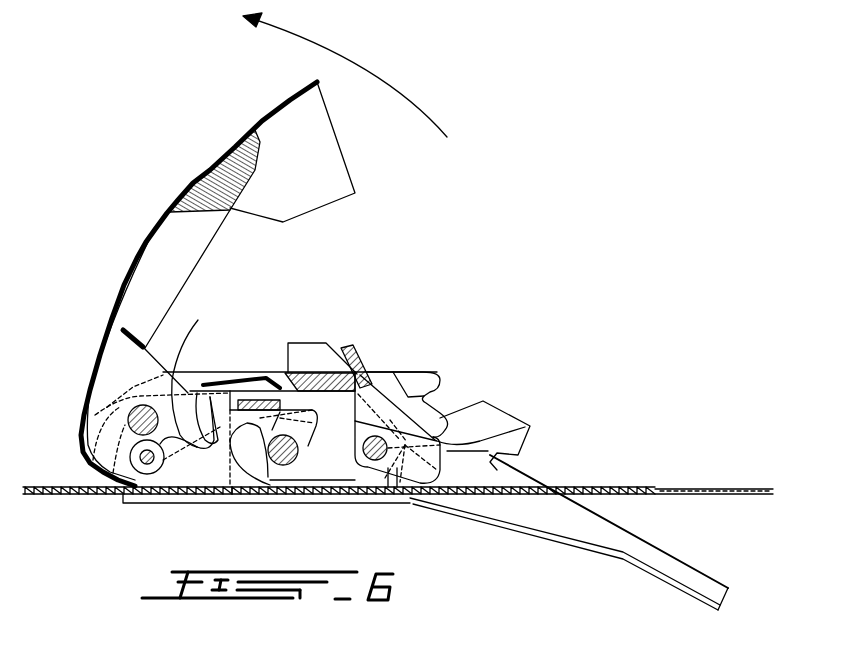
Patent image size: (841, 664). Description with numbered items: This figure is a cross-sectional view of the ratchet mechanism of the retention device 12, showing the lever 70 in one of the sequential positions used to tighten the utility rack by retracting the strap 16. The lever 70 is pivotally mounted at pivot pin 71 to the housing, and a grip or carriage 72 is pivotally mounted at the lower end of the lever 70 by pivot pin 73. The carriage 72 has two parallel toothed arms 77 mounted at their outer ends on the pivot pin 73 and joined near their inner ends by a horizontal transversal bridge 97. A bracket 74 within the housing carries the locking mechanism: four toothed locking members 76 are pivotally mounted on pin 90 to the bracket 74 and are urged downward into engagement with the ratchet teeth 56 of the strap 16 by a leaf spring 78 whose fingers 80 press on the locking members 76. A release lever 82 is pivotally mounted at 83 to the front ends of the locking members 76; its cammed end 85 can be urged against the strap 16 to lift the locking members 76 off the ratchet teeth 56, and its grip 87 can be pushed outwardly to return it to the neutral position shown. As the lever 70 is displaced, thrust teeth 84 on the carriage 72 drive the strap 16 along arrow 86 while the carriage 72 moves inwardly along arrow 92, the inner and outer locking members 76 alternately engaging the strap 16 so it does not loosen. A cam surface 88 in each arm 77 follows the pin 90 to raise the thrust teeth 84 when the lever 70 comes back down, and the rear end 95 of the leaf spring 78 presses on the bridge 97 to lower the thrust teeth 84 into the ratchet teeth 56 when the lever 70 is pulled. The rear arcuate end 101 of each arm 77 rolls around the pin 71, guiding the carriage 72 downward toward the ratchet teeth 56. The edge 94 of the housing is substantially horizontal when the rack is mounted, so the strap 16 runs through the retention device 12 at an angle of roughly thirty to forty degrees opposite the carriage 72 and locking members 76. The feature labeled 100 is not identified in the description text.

The retention device 12 is at (386, 253).
The strap 16 is at (78, 503).
The ratchet teeth 56 is at (65, 482).
The lever 70 is at (168, 208).
The pivot pin 71 is at (142, 404).
The carriage 72 is at (194, 373).
The pivot pin 73 is at (145, 472).
The bracket 74 is at (392, 371).
The toothed locking members 76 is at (337, 481).
The toothed arms 77 is at (197, 393).
The leaf spring 78 is at (289, 447).
The fingers 80 is at (390, 400).
The release lever 82 is at (380, 487).
The pivot 83 is at (487, 412).
The thrust teeth 84 is at (232, 494).
The cammed end 85 is at (525, 433).
The arrow 86 is at (620, 458).
The grip 87 is at (358, 356).
The cam surface 88 is at (269, 412).
The pin 90 is at (343, 371).
The arrow 92 is at (180, 466).
The edge 94 is at (670, 545).
The rear end 95 is at (240, 380).
The bridge 97 is at (283, 344).
The notch 100 is at (422, 396).
The rear arcuate end 101 is at (88, 396).